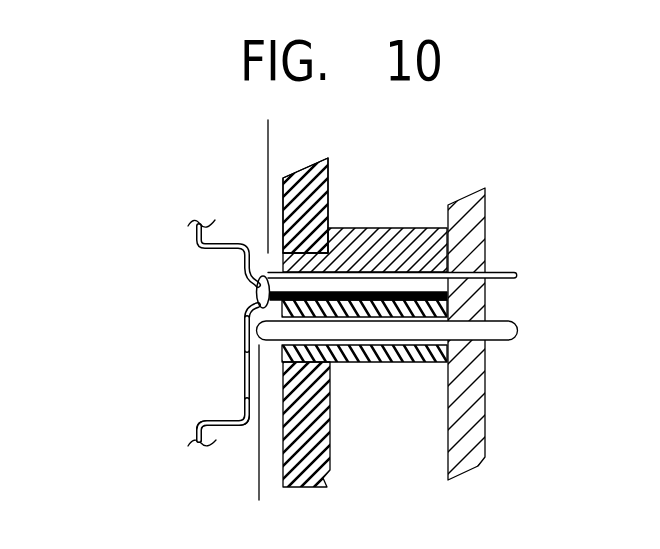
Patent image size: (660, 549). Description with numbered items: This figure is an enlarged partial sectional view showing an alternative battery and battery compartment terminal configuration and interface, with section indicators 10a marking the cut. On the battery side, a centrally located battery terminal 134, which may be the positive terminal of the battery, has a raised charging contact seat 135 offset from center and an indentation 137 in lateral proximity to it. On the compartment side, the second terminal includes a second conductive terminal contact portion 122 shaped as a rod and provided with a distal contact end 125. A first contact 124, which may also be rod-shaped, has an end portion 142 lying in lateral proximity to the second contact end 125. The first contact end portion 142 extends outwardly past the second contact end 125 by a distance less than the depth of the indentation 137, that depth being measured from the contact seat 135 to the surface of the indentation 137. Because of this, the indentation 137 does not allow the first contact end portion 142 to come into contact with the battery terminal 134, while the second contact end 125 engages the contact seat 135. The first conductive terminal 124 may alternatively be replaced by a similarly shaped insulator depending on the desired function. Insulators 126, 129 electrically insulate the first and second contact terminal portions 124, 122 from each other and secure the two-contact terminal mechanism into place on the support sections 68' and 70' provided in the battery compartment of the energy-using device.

The section line 10a is at (225, 141).
The support section 68' is at (305, 342).
The distal contact end 125 is at (292, 240).
The insulator 126 is at (350, 228).
The second conductive terminal contact portion 122 is at (387, 282).
The support section 70' is at (408, 334).
The insulator 129 is at (398, 352).
The first contact 124 is at (483, 333).
The end portion 142 is at (242, 355).
The indentation 137 is at (242, 336).
The battery terminal 134 is at (203, 418).
The charging contact seat 135 is at (262, 298).